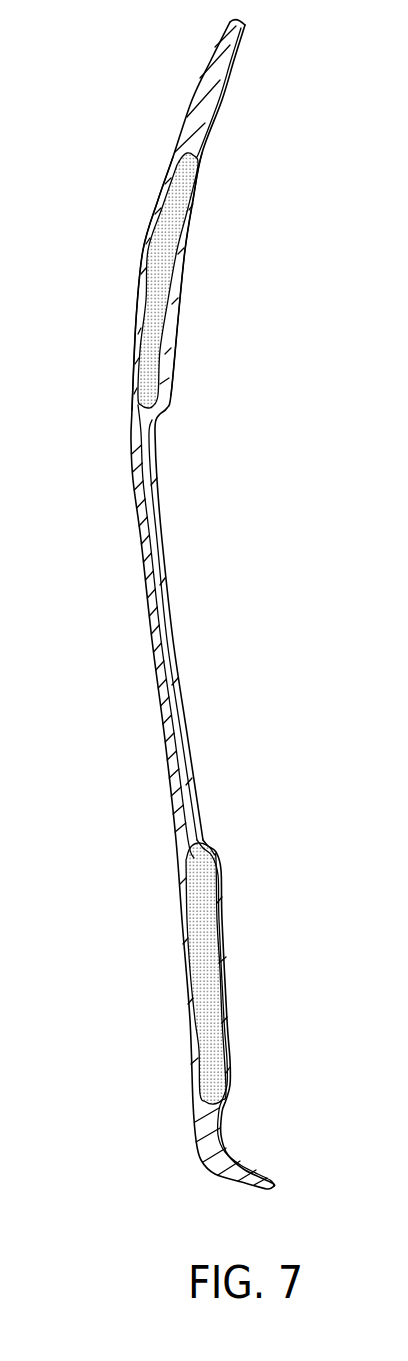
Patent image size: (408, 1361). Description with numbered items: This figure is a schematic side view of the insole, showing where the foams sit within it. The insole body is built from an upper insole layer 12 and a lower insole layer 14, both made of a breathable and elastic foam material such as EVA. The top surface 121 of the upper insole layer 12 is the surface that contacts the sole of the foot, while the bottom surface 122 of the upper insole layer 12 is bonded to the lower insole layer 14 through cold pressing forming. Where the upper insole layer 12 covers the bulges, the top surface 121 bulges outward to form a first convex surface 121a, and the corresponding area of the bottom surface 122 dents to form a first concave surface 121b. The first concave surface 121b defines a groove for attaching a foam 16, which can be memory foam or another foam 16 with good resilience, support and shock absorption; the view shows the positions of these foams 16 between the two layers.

The upper insole layer 12 is at (232, 68).
The lower insole layer 14 is at (198, 80).
The foam 16 is at (172, 230).
The top surface 121 is at (162, 530).
The first convex surface 121a is at (178, 322).
The first concave surface 121b is at (165, 353).
The bottom surface 122 is at (147, 433).